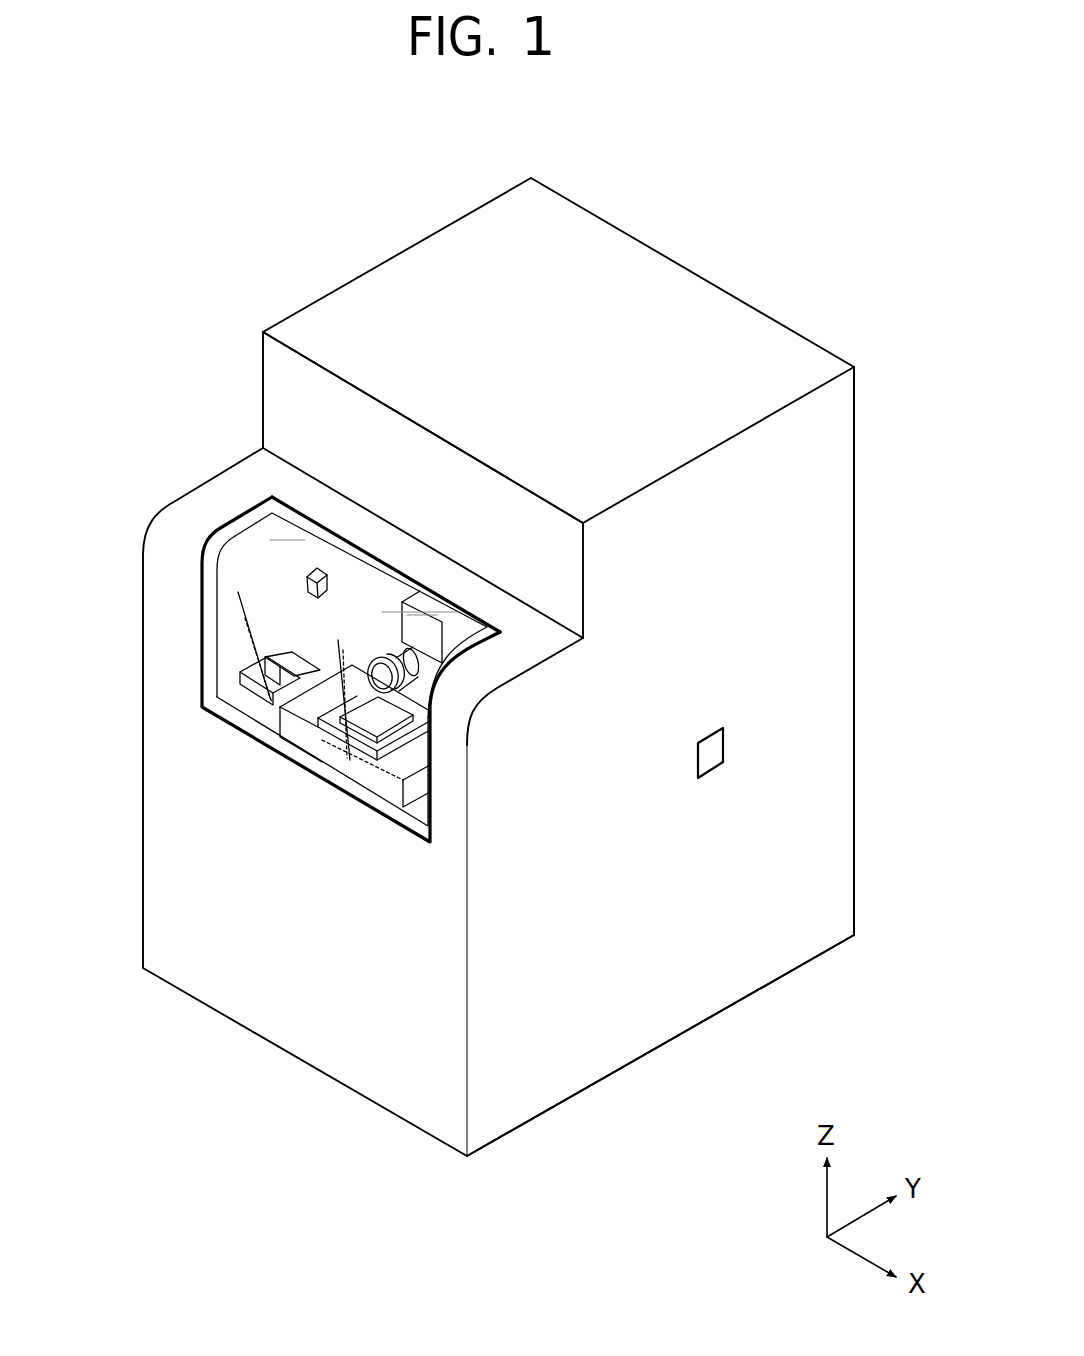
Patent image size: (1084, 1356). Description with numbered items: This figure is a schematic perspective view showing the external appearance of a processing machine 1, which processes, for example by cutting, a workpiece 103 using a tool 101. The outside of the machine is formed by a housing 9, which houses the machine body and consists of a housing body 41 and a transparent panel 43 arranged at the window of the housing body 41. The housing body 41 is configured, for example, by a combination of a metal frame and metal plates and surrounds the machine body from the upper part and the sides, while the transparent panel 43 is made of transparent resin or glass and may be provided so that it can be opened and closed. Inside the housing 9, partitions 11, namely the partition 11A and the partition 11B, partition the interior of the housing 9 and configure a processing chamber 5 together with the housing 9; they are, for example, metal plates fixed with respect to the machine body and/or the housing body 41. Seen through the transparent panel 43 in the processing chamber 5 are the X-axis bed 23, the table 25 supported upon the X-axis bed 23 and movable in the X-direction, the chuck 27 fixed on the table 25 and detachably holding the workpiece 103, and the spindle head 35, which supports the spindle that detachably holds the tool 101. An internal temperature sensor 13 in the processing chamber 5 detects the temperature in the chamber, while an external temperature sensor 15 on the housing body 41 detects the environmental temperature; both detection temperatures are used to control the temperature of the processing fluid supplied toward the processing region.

The processing machine 1 is at (826, 231).
The processing chamber 5 is at (241, 586).
The housing 9 is at (828, 470).
The partitions 11 is at (281, 643).
The partition 11A is at (345, 580).
The partition 11B is at (230, 627).
The internal temperature sensor 13 is at (305, 572).
The external temperature sensor 15 is at (712, 752).
The X-axis bed 23 is at (253, 713).
The table 25 is at (382, 784).
The chuck 27 is at (320, 678).
The spindle head 35 is at (427, 647).
The housing body 41 is at (835, 701).
The transparent panel 43 is at (233, 673).
The tool 101 is at (375, 652).
The workpiece 103 is at (367, 722).